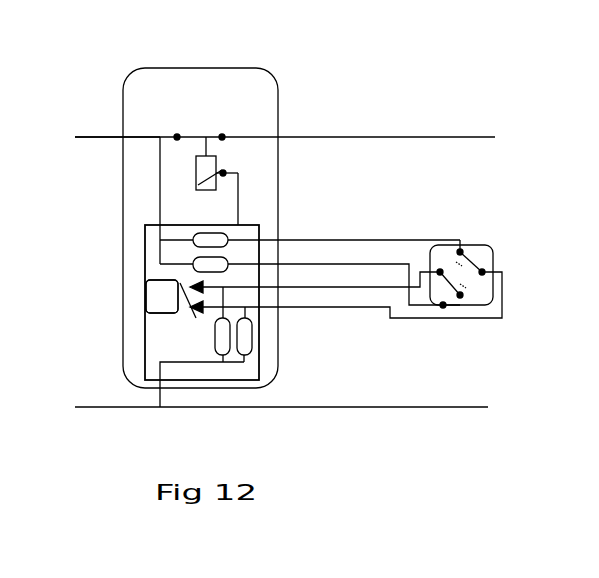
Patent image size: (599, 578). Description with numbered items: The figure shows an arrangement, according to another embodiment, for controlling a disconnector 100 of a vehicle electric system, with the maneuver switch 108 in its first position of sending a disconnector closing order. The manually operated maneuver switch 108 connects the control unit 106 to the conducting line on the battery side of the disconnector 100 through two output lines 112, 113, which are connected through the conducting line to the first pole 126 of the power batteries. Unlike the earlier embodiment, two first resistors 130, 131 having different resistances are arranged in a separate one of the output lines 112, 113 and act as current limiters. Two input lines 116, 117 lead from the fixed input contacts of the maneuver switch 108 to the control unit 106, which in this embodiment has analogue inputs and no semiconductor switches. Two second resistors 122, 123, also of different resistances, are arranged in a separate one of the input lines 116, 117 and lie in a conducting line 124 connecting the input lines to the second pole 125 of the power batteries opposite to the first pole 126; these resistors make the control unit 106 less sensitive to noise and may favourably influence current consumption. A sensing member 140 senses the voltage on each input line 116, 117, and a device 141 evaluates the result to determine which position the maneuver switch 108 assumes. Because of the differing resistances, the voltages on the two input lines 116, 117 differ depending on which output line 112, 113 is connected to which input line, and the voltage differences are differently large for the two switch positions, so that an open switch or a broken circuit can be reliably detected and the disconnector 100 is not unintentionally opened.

The disconnector 100 is at (190, 137).
The first pole 126 is at (113, 135).
The second pole 125 is at (80, 410).
The second resistor 123 is at (262, 347).
The first resistor 130 is at (217, 236).
The first resistor 131 is at (227, 260).
The device 141 is at (147, 282).
The control unit 106 is at (144, 312).
The sensing member 140 is at (195, 307).
The output line 112 is at (387, 240).
The output line 113 is at (327, 263).
The input line 117 is at (332, 285).
The input line 116 is at (420, 318).
The maneuver switch 108 is at (487, 247).
The second resistor 122 is at (247, 345).
The conducting line 124 is at (190, 362).